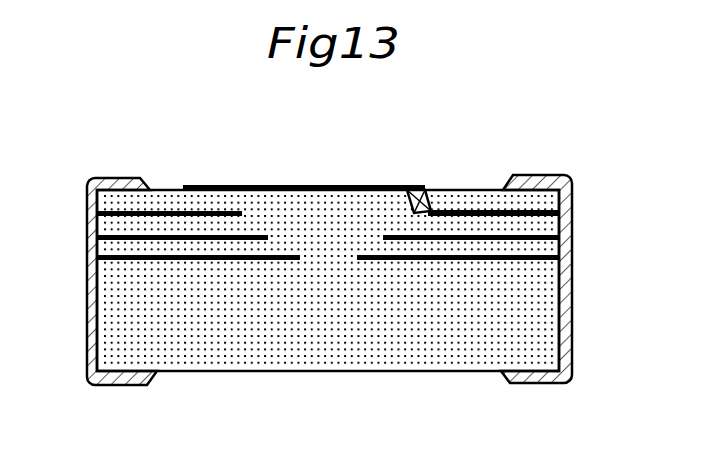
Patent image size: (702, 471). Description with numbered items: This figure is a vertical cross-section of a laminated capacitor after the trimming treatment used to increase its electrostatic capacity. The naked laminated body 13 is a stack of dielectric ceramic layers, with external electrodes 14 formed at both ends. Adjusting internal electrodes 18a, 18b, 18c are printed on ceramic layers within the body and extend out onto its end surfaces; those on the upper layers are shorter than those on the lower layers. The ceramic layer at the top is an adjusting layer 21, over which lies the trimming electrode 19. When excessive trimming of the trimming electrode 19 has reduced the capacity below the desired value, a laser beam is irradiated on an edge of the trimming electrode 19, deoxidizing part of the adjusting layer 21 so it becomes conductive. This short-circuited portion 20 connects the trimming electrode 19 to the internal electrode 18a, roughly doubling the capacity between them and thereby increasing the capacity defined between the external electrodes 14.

The naked laminated body 13 is at (387, 358).
The external electrode 14 is at (531, 177).
The internal electrode 18a is at (473, 210).
The internal electrode 18b is at (265, 236).
The internal electrode 18c is at (373, 252).
The trimming electrode 19 is at (217, 186).
The short-circuited portion 20 is at (420, 191).
The adjusting layer 21 is at (448, 200).